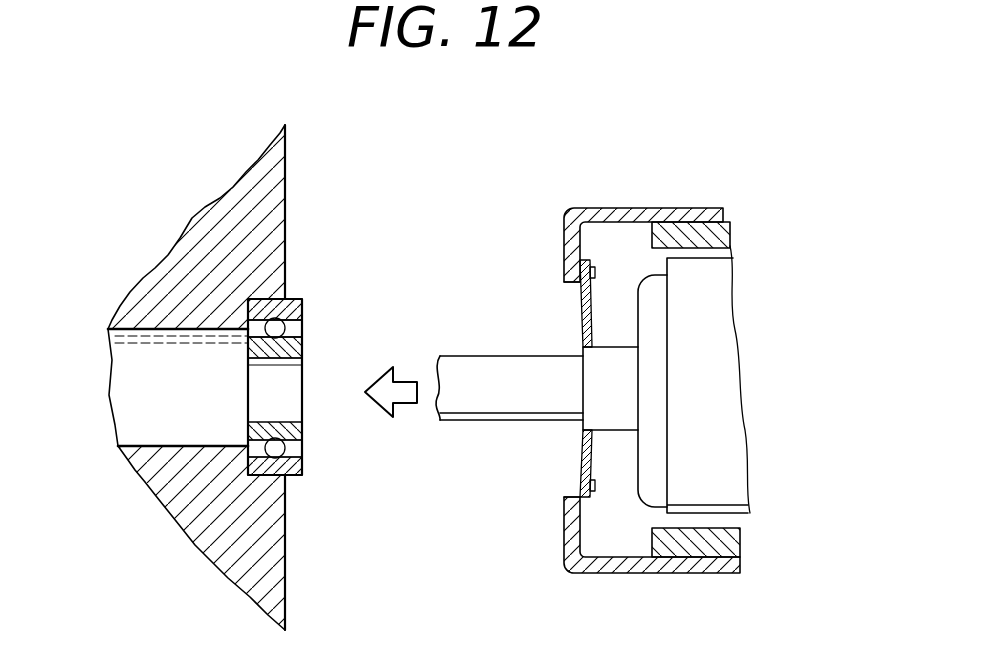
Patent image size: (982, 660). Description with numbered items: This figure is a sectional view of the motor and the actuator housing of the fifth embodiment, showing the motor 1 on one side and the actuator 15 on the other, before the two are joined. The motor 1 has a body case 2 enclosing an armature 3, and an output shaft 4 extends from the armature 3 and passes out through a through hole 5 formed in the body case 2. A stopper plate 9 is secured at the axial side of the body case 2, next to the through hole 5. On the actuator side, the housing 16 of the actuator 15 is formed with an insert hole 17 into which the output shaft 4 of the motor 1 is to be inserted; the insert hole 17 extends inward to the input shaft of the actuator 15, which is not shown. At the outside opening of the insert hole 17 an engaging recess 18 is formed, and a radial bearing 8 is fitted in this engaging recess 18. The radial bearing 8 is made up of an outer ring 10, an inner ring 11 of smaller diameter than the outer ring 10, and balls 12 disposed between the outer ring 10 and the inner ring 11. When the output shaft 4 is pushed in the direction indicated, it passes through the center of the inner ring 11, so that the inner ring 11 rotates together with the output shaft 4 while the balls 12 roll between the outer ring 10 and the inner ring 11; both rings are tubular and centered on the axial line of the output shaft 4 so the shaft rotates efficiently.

The motor 1 is at (575, 208).
The body case 2 is at (647, 210).
The armature 3 is at (725, 322).
The output shaft 4 is at (463, 357).
The through hole 5 is at (574, 290).
The radial bearing 8 is at (303, 291).
The stopper plate 9 is at (592, 314).
The outer ring 10 is at (303, 473).
The inner ring 11 is at (303, 432).
The balls 12 is at (303, 449).
The actuator 15 is at (152, 240).
The housing 16 is at (232, 195).
The insert hole 17 is at (160, 336).
The engaging recess 18 is at (243, 336).